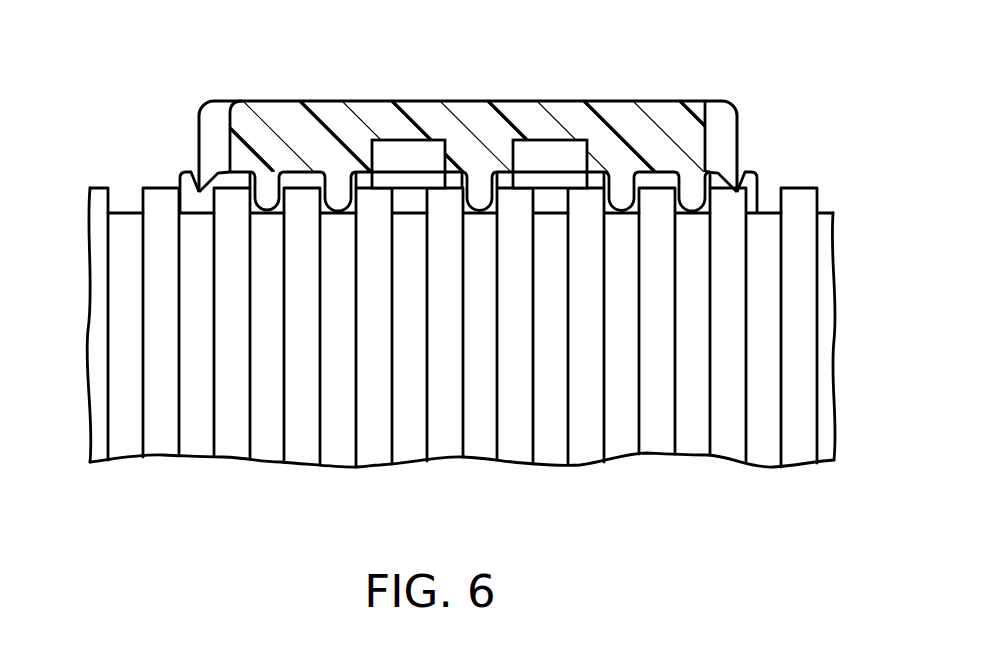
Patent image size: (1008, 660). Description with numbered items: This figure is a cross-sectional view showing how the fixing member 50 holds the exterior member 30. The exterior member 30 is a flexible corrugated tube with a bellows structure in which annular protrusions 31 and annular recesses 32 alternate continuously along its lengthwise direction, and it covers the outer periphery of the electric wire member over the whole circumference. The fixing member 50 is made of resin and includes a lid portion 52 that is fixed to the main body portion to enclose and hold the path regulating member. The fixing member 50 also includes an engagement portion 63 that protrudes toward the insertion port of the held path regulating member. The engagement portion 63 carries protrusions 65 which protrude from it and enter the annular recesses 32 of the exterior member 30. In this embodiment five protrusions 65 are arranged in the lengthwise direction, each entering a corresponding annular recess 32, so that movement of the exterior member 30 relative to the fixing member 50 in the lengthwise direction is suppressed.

The exterior member 30 is at (93, 187).
The annular protrusion 31 is at (225, 187).
The annular recess 32 is at (280, 203).
The fixing member 50 is at (696, 101).
The lid portion 52 is at (259, 101).
The engagement portion 63 is at (371, 150).
The protrusion 65 is at (263, 197).